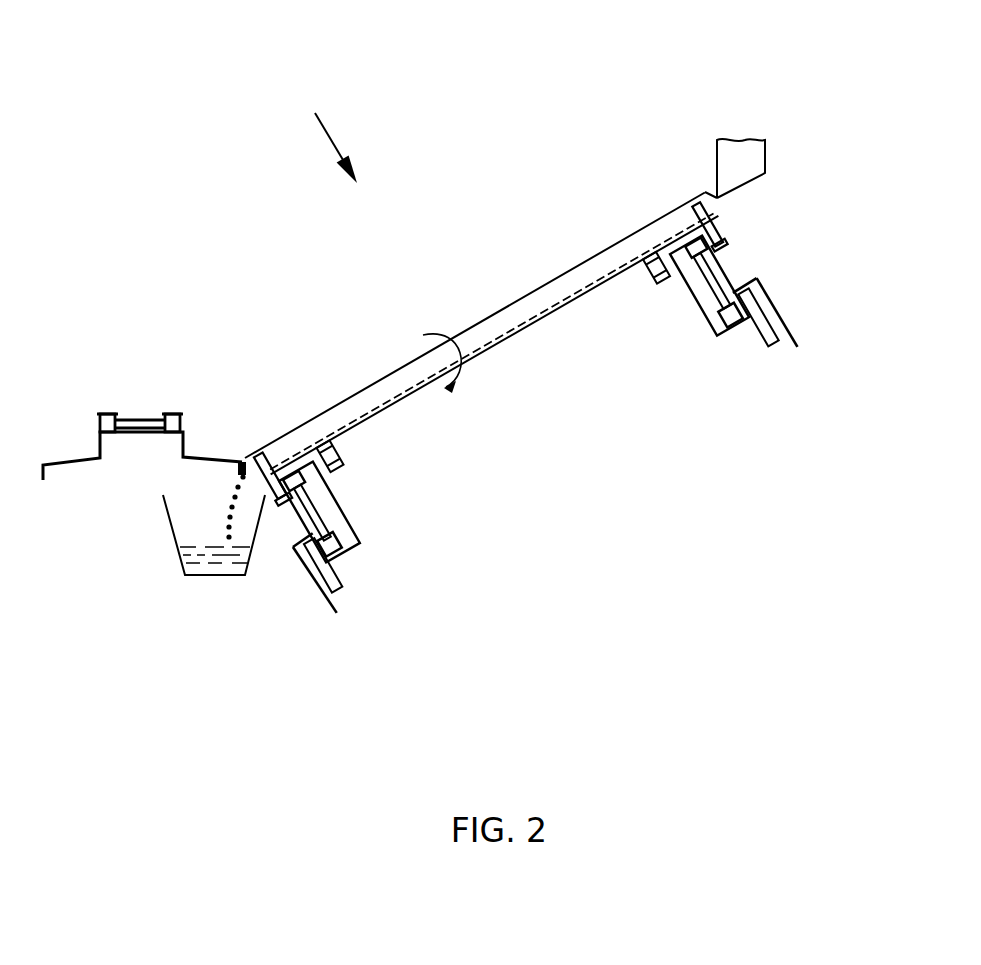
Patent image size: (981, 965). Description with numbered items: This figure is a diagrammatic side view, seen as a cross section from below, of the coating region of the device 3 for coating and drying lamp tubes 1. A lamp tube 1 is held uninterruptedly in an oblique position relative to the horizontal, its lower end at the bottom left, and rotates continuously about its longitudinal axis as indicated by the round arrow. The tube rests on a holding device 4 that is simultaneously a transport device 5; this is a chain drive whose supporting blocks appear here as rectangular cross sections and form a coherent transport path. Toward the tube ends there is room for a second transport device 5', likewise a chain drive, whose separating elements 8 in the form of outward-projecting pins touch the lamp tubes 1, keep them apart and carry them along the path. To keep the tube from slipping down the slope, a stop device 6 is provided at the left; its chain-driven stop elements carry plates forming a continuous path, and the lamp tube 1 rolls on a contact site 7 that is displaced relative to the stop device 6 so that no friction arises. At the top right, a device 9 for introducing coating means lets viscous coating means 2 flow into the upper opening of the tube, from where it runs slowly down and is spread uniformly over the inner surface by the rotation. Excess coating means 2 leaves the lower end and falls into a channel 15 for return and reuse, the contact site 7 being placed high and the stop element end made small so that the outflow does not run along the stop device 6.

The lamp tube 1 is at (495, 323).
The coating means 2 is at (548, 290).
The device for coating and drying lamp tubes 3 is at (328, 131).
The holding device 4 is at (501, 384).
The transport device 5 is at (501, 384).
The second transport device 5' is at (531, 431).
The stop device 6 is at (142, 423).
The contact site 7 is at (243, 457).
The separating elements 8 is at (267, 492).
The device for introducing coating means 9 is at (741, 155).
The channel 15 is at (212, 570).